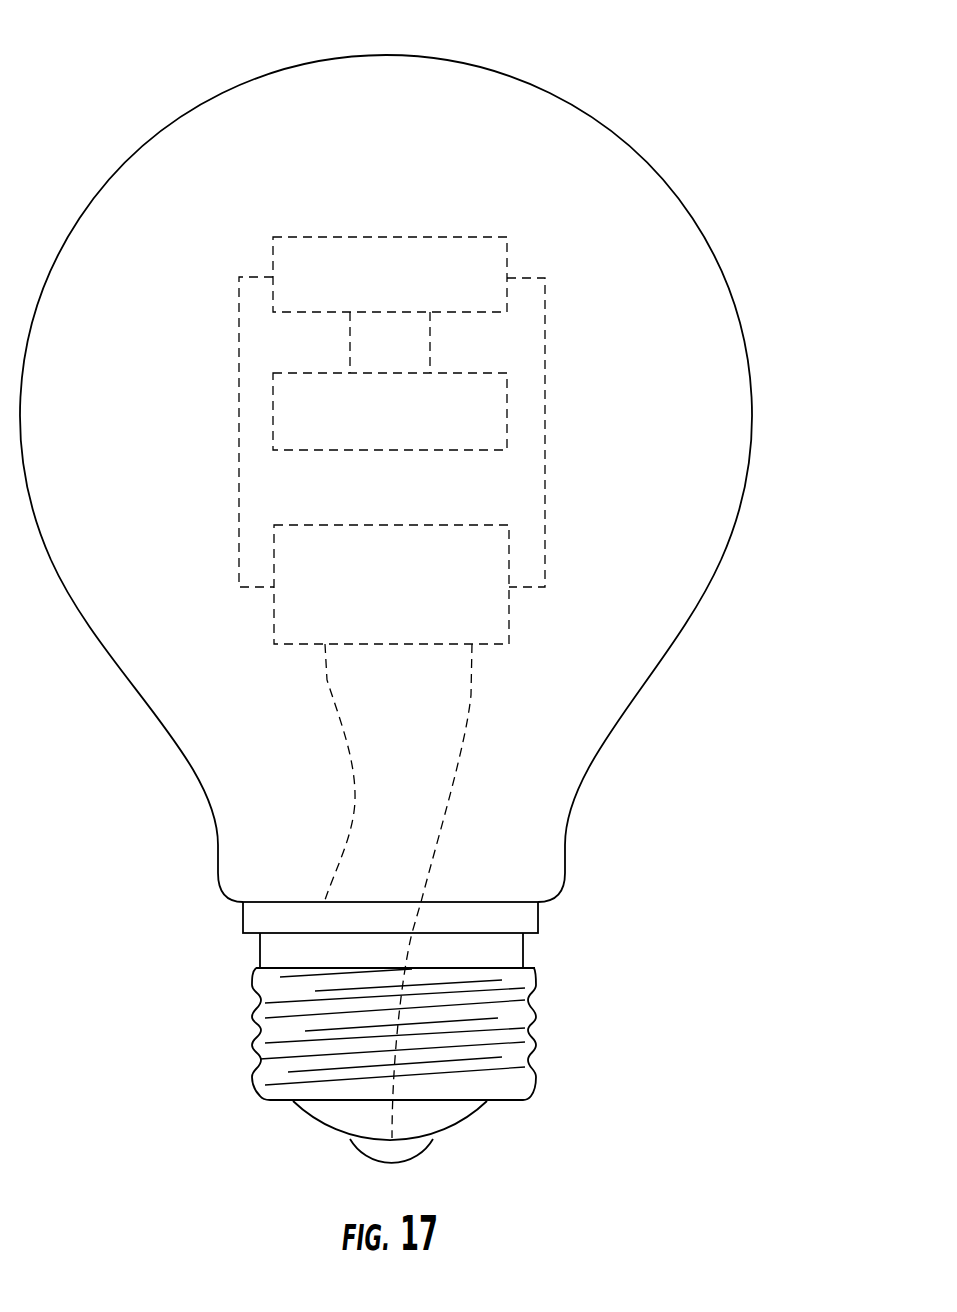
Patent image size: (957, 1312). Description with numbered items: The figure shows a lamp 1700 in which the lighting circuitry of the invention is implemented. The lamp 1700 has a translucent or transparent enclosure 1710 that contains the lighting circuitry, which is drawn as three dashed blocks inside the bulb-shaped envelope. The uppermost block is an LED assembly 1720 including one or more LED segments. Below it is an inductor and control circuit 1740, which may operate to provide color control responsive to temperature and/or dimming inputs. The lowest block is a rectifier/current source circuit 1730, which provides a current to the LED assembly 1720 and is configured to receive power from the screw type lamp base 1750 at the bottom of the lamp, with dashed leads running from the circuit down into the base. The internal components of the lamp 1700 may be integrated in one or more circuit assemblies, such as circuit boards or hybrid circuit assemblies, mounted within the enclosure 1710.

The lamp 1700 is at (409, 590).
The enclosure 1710 is at (558, 98).
The LED assembly 1720 is at (450, 237).
The rectifier/current source circuit 1730 is at (450, 525).
The inductor and control circuit 1740 is at (450, 373).
The screw type lamp base 1750 is at (478, 1112).